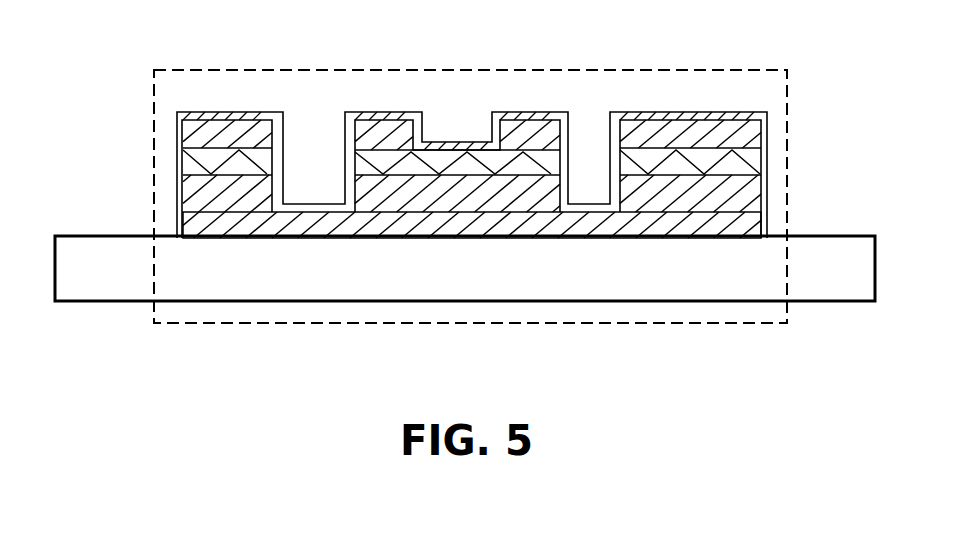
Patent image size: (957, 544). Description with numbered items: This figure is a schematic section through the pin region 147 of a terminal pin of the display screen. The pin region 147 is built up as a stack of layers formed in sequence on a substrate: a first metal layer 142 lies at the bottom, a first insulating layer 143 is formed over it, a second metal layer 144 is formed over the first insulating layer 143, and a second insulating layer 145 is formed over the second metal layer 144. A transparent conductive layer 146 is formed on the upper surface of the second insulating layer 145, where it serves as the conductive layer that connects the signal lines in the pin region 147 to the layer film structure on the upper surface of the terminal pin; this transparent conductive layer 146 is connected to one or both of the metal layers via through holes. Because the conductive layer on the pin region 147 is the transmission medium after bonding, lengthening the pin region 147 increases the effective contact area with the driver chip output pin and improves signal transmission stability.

The first metal layer 142 is at (767, 236).
The first insulating layer 143 is at (187, 192).
The second metal layer 144 is at (750, 162).
The second insulating layer 145 is at (183, 143).
The transparent conductive layer 146 is at (763, 118).
The pin region 147 is at (593, 70).